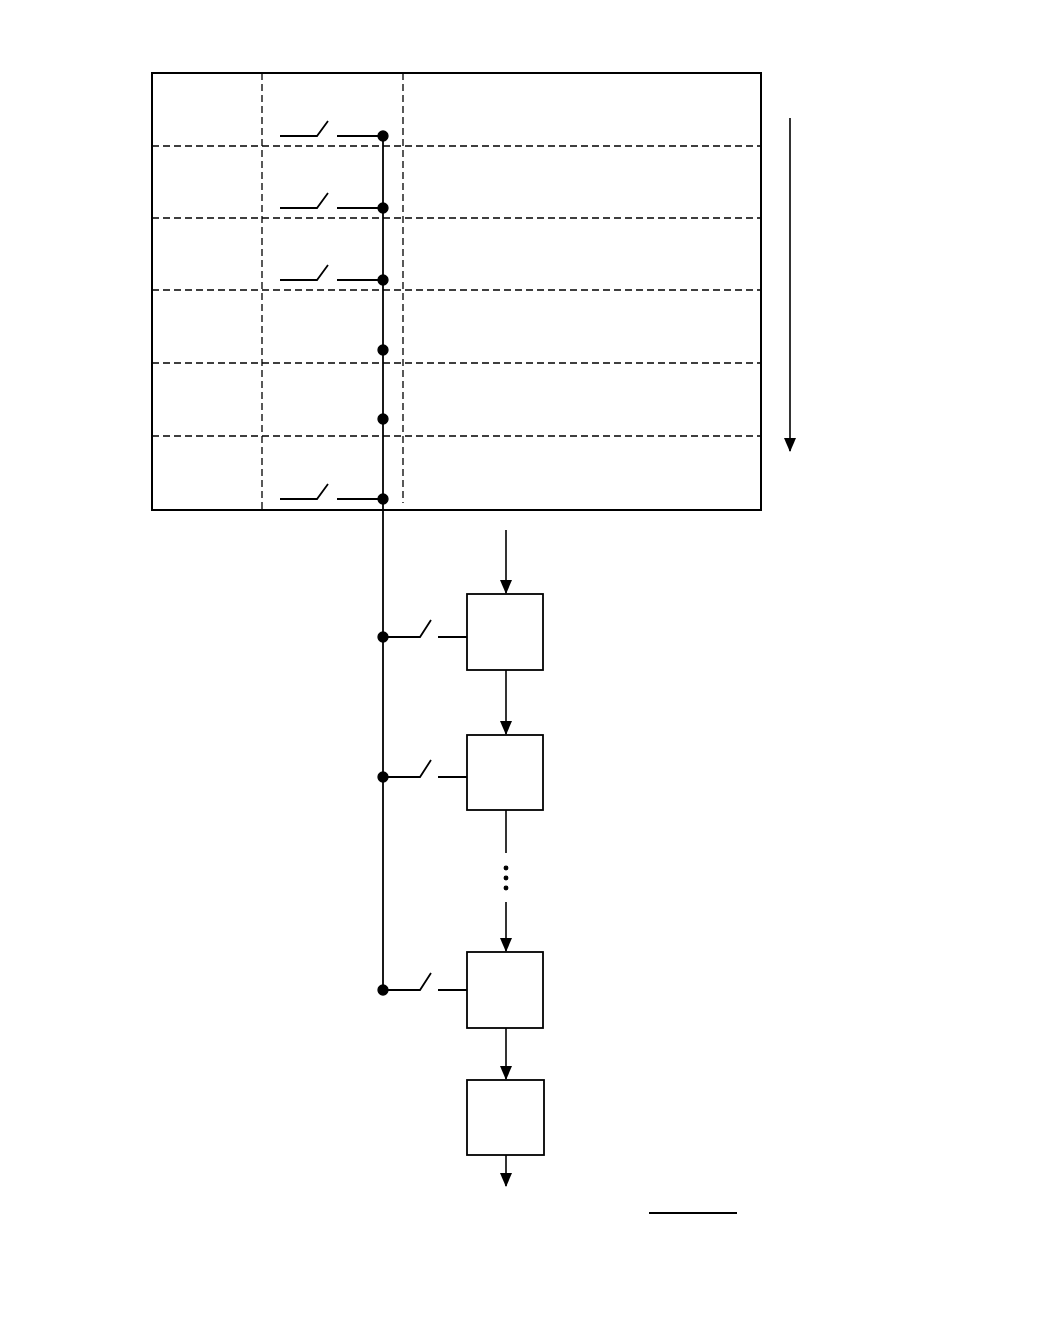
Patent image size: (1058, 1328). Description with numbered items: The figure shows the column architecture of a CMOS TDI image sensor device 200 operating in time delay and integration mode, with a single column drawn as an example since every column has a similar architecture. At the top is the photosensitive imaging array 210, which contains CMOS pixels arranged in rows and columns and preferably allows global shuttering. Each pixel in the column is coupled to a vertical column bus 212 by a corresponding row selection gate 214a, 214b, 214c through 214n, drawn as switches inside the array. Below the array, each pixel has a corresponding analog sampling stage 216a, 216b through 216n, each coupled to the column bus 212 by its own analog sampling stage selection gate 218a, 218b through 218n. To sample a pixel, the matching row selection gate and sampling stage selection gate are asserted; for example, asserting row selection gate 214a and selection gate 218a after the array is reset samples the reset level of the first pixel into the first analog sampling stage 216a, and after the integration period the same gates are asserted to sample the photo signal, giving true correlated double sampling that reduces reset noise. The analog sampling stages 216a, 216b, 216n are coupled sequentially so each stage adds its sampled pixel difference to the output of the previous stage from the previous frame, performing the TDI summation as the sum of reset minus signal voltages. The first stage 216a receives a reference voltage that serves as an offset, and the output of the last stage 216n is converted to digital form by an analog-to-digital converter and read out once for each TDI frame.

The CMOS TDI image sensor device 200 is at (689, 58).
The photosensitive imaging array 210 is at (454, 60).
The column bus 212 is at (383, 531).
The row selection gate 214a is at (324, 122).
The row selection gate 214b is at (324, 194).
The row selection gate 214c is at (324, 266).
The row selection gate 214n is at (324, 485).
The analog sampling stage 216a is at (544, 621).
The analog sampling stage 216b is at (544, 761).
The analog sampling stage 216n is at (544, 978).
The analog sampling stage selection gate 218a is at (428, 622).
The analog sampling stage selection gate 218b is at (428, 762).
The analog sampling stage selection gate 218n is at (428, 975).